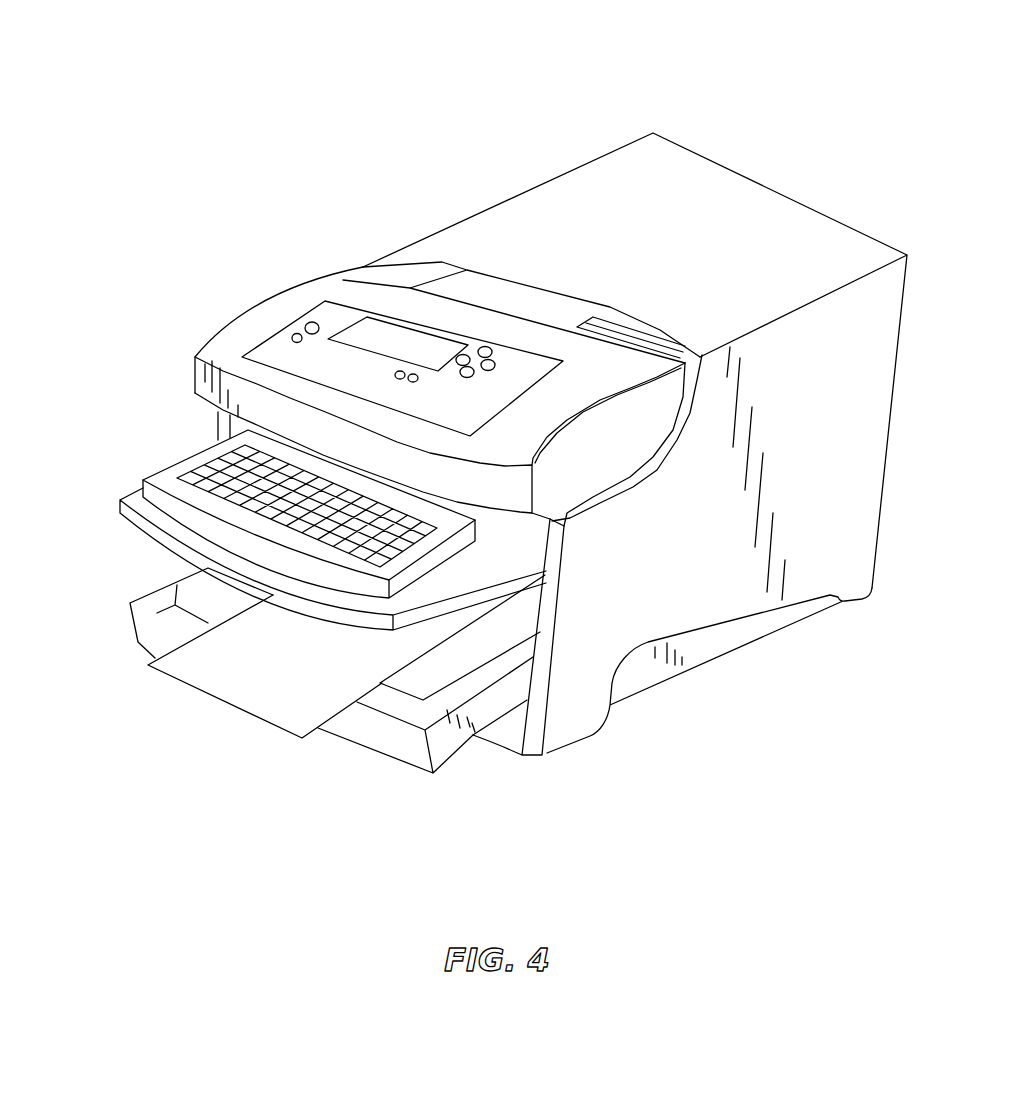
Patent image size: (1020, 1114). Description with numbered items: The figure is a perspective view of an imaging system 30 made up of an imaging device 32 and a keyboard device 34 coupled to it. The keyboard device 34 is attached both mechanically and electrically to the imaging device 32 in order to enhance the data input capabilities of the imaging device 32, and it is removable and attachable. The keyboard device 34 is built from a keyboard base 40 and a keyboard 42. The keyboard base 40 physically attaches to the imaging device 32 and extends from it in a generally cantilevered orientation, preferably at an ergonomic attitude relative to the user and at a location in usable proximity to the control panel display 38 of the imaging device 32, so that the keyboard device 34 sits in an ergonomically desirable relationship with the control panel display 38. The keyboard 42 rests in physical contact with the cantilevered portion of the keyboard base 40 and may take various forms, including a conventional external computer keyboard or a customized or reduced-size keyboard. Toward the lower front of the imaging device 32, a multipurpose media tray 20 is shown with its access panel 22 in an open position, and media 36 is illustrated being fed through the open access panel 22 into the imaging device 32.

The imaging system 30 is at (482, 30).
The imaging device 32 is at (640, 233).
The keyboard device 34 is at (125, 470).
The media 36 is at (245, 658).
The control panel display 38 is at (357, 333).
The keyboard base 40 is at (160, 530).
The keyboard 42 is at (198, 462).
The access panel 22 is at (387, 742).
The multipurpose media tray 20 is at (460, 768).